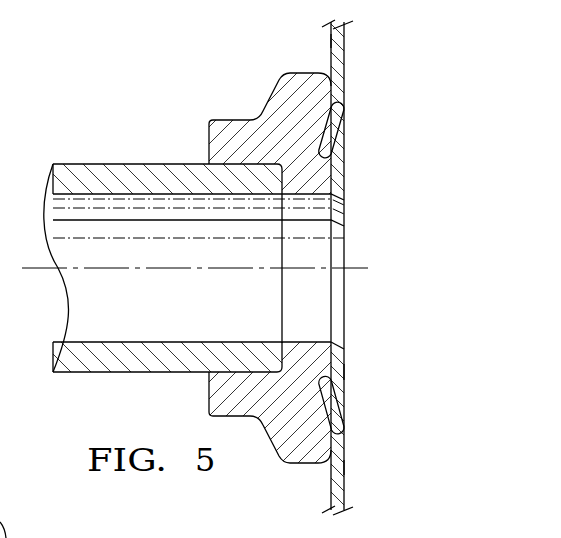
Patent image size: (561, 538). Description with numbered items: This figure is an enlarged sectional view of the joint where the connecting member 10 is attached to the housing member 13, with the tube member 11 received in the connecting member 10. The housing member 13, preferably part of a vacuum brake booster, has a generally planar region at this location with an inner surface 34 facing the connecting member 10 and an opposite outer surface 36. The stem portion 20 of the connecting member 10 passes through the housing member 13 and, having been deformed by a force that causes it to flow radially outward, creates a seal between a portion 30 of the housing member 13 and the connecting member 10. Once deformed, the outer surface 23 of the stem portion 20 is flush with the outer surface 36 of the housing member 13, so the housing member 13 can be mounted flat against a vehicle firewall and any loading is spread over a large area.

The connecting member 10 is at (233, 81).
The tube member 11 is at (135, 373).
The housing member 13 is at (357, 51).
The stem portion 20 is at (368, 156).
The outer surface of the stem portion 23 is at (346, 372).
The portion of the housing member 30 is at (327, 138).
The inner surface 34 is at (331, 42).
The outer surface 36 is at (346, 467).